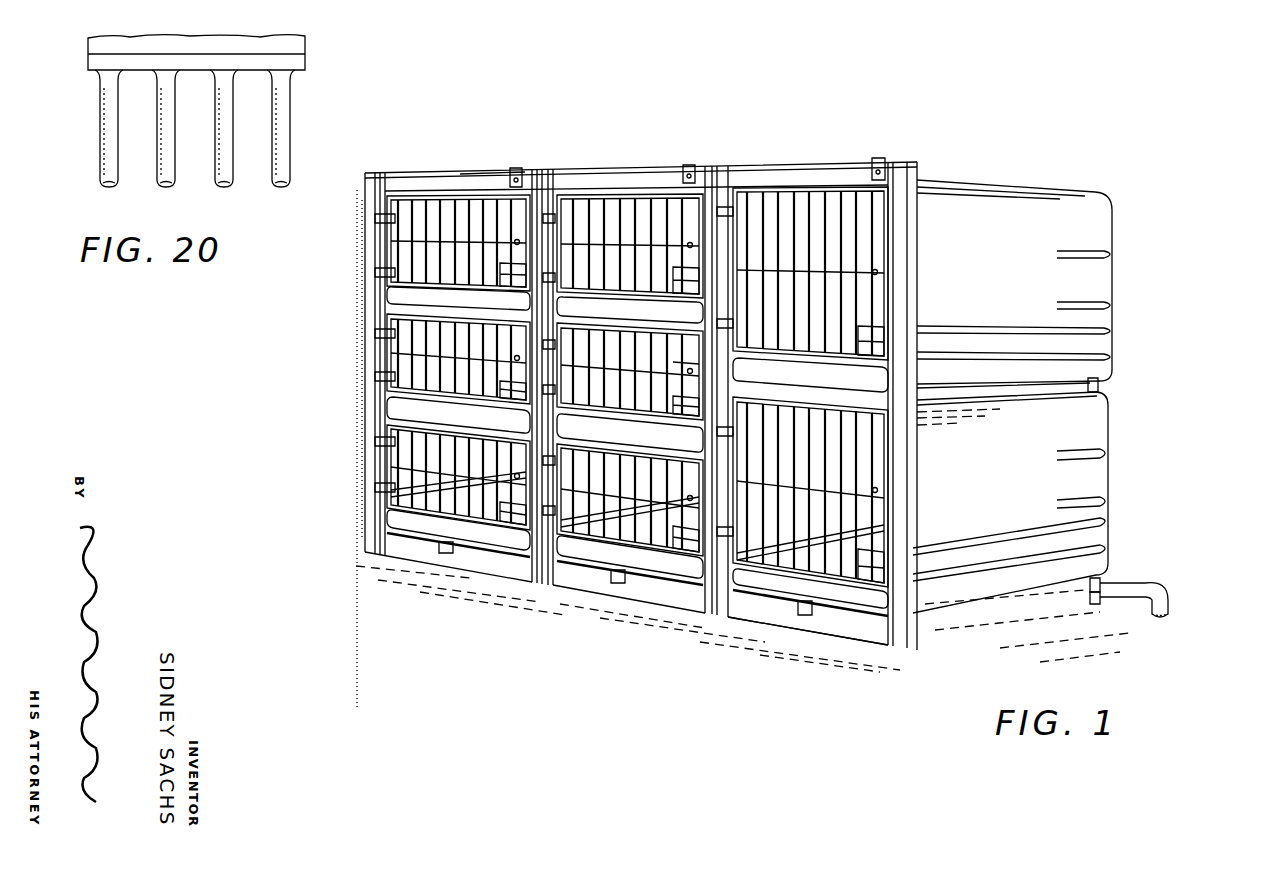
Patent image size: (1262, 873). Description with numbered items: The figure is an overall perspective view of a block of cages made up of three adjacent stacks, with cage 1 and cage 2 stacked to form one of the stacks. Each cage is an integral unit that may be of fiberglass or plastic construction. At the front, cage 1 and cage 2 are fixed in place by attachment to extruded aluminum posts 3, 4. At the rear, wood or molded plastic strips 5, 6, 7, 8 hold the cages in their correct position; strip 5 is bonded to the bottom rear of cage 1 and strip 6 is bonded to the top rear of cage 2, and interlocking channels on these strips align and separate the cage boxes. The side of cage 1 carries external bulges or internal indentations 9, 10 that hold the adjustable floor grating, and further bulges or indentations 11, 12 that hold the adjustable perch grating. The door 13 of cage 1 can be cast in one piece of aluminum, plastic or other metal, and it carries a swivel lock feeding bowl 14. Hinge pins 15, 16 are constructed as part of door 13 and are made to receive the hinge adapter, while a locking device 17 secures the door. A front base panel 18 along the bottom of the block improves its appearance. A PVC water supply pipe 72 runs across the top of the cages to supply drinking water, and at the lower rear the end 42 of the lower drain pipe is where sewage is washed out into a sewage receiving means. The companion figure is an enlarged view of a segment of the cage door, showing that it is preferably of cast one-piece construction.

The cage 1 is at (1077, 192).
The cage 2 is at (1100, 437).
The extruded aluminum post 3 is at (725, 170).
The extruded aluminum post 4 is at (906, 167).
The strip 5 is at (1100, 381).
The strip 6 is at (1104, 390).
The strip 7 is at (1100, 580).
The strip 8 is at (1096, 604).
The bulge 9 is at (1100, 328).
The bulge 10 is at (1098, 368).
The bulge 11 is at (1080, 248).
The bulge 12 is at (1097, 306).
The door 13 is at (865, 243).
The swivel lock feeding bowl 14 is at (878, 330).
The hinge pin 15 is at (727, 206).
The hinge pin 16 is at (694, 371).
The locking device 17 is at (895, 292).
The front base panel 18 is at (850, 627).
The end 42 is at (1168, 598).
The PVC water supply pipe 72 is at (466, 173).